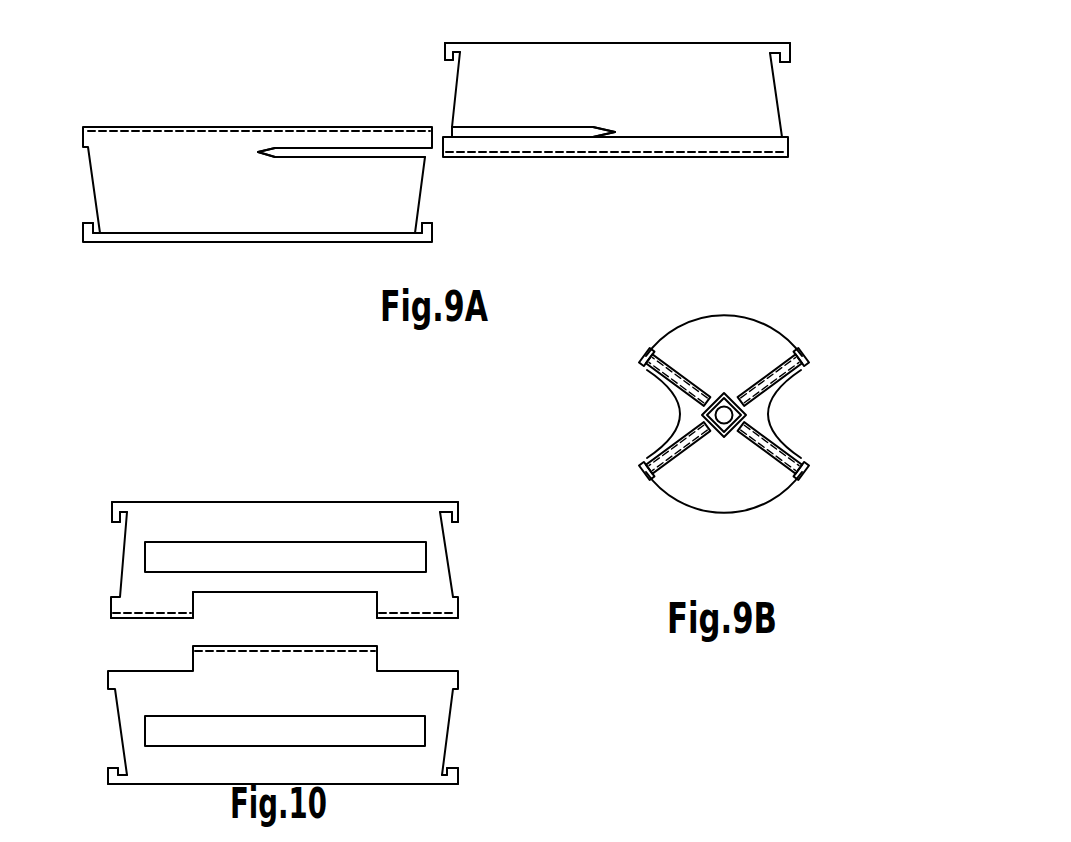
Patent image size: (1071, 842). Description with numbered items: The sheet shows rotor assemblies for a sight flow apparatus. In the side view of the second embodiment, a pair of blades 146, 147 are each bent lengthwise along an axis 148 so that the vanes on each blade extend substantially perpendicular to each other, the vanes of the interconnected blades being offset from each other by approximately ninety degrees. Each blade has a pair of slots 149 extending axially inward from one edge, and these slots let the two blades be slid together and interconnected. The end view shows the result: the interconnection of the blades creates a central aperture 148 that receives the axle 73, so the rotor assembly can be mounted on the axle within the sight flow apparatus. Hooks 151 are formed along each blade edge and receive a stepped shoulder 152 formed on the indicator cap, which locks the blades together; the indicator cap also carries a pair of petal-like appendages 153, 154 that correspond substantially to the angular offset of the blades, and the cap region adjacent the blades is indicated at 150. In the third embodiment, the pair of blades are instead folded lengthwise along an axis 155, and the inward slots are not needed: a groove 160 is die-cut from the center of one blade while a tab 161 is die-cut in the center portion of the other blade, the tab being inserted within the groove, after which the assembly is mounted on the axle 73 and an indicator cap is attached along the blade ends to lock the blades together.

In FIG. 9B, the axle 73 is at (723, 417).
In FIG. 9A, the blade 146 is at (102, 193).
In FIG. 9B, the blade 146 is at (673, 442).
In FIG. 9A, the blade 147 is at (700, 63).
In FIG. 9B, the blade 147 is at (783, 387).
In FIG. 9A, the axis 148 is at (192, 127).
In FIG. 9B, the axis 148 is at (723, 393).
In FIG. 9A, the slot 149 is at (342, 147).
In FIG. 9B, the seam 150 is at (748, 436).
In FIG. 9A, the hook 151 is at (87, 227).
In FIG. 9B, the hook 151 is at (684, 501).
In FIG. 10, the hook 151 is at (118, 518).
In FIG. 9B, the stepped shoulder 152 is at (641, 366).
In FIG. 9B, the petal-like appendage 153 is at (762, 478).
In FIG. 9B, the petal-like appendage 154 is at (757, 343).
In FIG. 10, the axis 155 is at (193, 661).
In FIG. 10, the groove 160 is at (298, 589).
In FIG. 10, the tab 161 is at (345, 646).